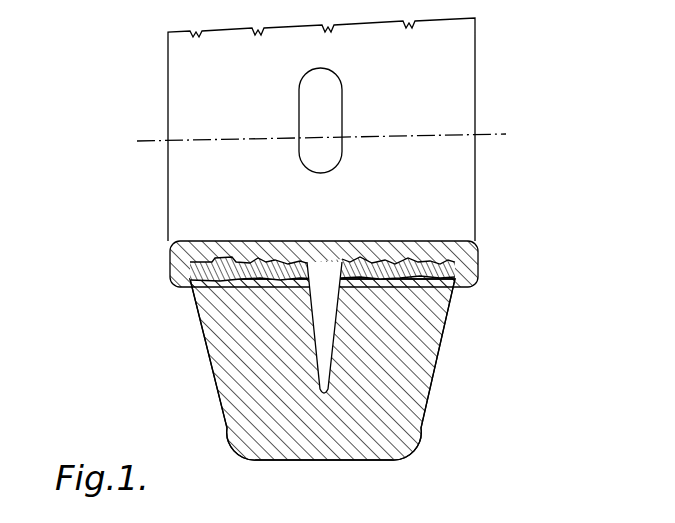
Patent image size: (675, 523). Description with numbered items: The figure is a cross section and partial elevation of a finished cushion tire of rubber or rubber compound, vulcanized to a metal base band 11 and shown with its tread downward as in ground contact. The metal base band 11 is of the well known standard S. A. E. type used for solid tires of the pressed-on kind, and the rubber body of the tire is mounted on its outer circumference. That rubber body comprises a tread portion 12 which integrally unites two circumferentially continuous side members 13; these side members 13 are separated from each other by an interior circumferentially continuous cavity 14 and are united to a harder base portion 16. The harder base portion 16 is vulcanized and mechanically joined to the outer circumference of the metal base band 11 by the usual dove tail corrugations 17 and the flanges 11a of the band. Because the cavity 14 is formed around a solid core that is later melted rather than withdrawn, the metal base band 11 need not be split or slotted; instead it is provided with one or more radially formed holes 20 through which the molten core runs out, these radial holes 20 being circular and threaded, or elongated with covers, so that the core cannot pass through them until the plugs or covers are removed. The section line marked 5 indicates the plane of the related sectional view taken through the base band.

The section line 5- 5 is at (321, 137).
The metal base band 11 is at (446, 241).
The flanges 11a is at (170, 272).
The tread portion 12 is at (390, 441).
The side members 13 is at (215, 353).
The cavity 14 is at (326, 277).
The harder base portion 16 is at (240, 268).
The dove tail corrugations 17 is at (240, 262).
The radially formed holes 20 is at (332, 127).